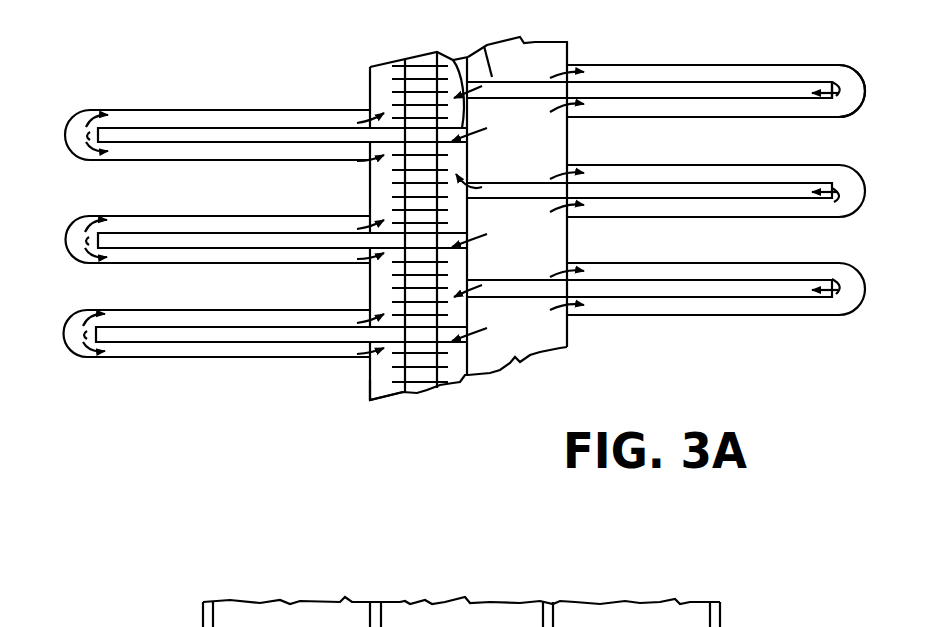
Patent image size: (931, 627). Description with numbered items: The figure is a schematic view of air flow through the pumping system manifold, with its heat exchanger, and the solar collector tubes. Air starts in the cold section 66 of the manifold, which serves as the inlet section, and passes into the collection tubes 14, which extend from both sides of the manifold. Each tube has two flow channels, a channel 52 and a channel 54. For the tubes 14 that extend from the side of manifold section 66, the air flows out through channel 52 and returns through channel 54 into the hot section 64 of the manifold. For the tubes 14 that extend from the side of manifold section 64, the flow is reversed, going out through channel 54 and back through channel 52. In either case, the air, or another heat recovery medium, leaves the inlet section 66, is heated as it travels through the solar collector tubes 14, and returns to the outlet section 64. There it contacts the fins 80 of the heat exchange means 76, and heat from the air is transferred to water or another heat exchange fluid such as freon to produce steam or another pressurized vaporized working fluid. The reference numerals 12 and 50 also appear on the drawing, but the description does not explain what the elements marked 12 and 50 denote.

The heat exchanger 12 is at (356, 72).
The collection tubes 14 is at (163, 167).
The tube sheet 50 is at (484, 46).
The channel 52 is at (708, 73).
The channel 54 is at (657, 88).
The hot section of the manifold 64 is at (455, 365).
The cold section of the manifold 66 is at (548, 155).
The heat exchange means 76 is at (397, 407).
The fins 80 is at (430, 380).